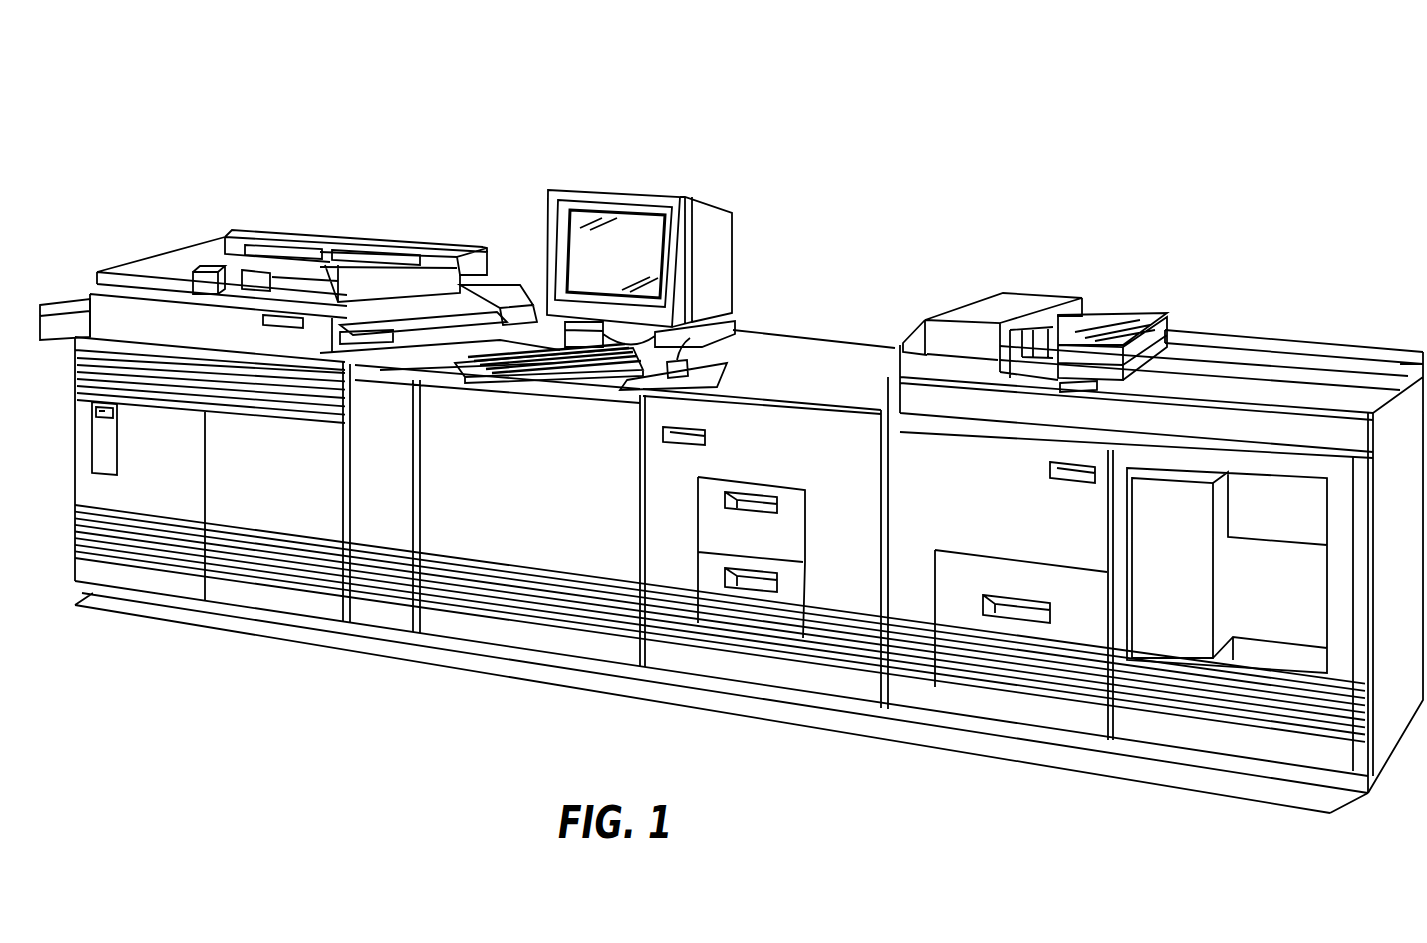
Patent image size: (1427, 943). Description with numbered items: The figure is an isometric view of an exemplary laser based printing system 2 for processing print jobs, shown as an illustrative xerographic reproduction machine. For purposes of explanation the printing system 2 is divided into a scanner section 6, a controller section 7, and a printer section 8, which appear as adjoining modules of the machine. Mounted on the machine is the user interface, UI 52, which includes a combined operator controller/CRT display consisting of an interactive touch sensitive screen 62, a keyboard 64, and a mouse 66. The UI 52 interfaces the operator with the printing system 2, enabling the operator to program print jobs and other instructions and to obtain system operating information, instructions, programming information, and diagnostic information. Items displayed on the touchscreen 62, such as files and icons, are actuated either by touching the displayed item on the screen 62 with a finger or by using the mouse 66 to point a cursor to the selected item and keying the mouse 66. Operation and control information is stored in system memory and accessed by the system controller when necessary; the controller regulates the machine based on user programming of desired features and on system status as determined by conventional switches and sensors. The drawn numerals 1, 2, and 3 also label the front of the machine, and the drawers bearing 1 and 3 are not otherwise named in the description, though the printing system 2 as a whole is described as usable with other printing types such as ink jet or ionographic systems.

The first paper tray drawer 1 is at (765, 543).
The printing system 2 is at (882, 66).
The third paper tray drawer 3 is at (1021, 618).
The scanner section 6 is at (335, 198).
The controller section 7 is at (60, 485).
The printer section 8 is at (851, 249).
The UI 52 is at (619, 237).
The interactive touch sensitive screen 62 is at (577, 262).
The keyboard 64 is at (526, 384).
The mouse 66 is at (634, 385).